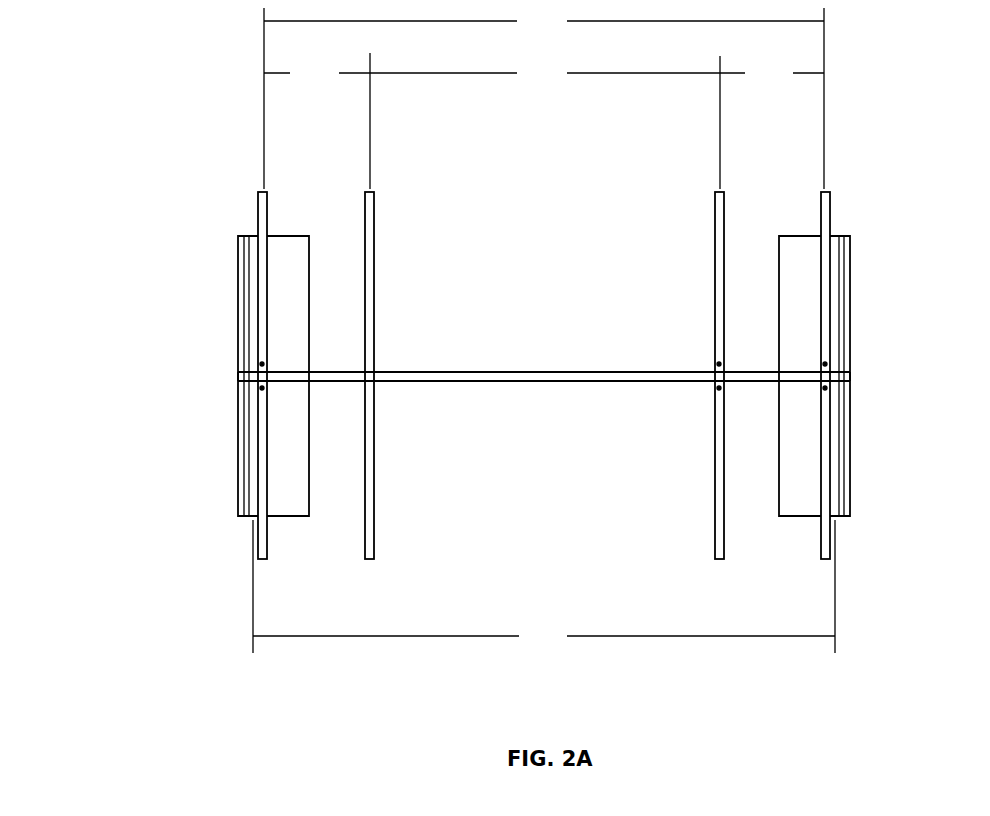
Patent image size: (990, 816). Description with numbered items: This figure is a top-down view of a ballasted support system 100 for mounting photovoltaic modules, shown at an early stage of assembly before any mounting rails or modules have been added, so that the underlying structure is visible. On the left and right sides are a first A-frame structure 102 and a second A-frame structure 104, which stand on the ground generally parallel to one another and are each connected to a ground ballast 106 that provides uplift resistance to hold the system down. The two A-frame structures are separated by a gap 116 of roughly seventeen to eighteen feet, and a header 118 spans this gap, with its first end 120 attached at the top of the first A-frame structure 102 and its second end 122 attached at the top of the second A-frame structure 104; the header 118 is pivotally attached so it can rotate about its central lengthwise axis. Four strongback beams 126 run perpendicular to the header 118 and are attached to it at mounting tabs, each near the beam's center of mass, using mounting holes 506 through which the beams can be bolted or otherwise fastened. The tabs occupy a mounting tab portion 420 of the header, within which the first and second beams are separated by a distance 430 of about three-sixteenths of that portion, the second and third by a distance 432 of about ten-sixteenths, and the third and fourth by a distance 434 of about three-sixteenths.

The ballasted support system 100 is at (163, 115).
The first A-frame structure 102 is at (238, 451).
The second A-frame structure 104 is at (852, 452).
The ground ballast 106 is at (288, 522).
The gap 116 is at (564, 649).
The header 118 is at (543, 366).
The first end 120 is at (250, 378).
The second end 122 is at (839, 378).
The strongback beams 126 is at (823, 203).
The mounting tab portion 420 is at (562, 30).
The distance between first and second mounting tabs 430 is at (335, 83).
The distance between second and third mounting tabs 432 is at (562, 80).
The distance between third and fourth mounting tabs 434 is at (790, 82).
The mounting holes 506 is at (719, 388).